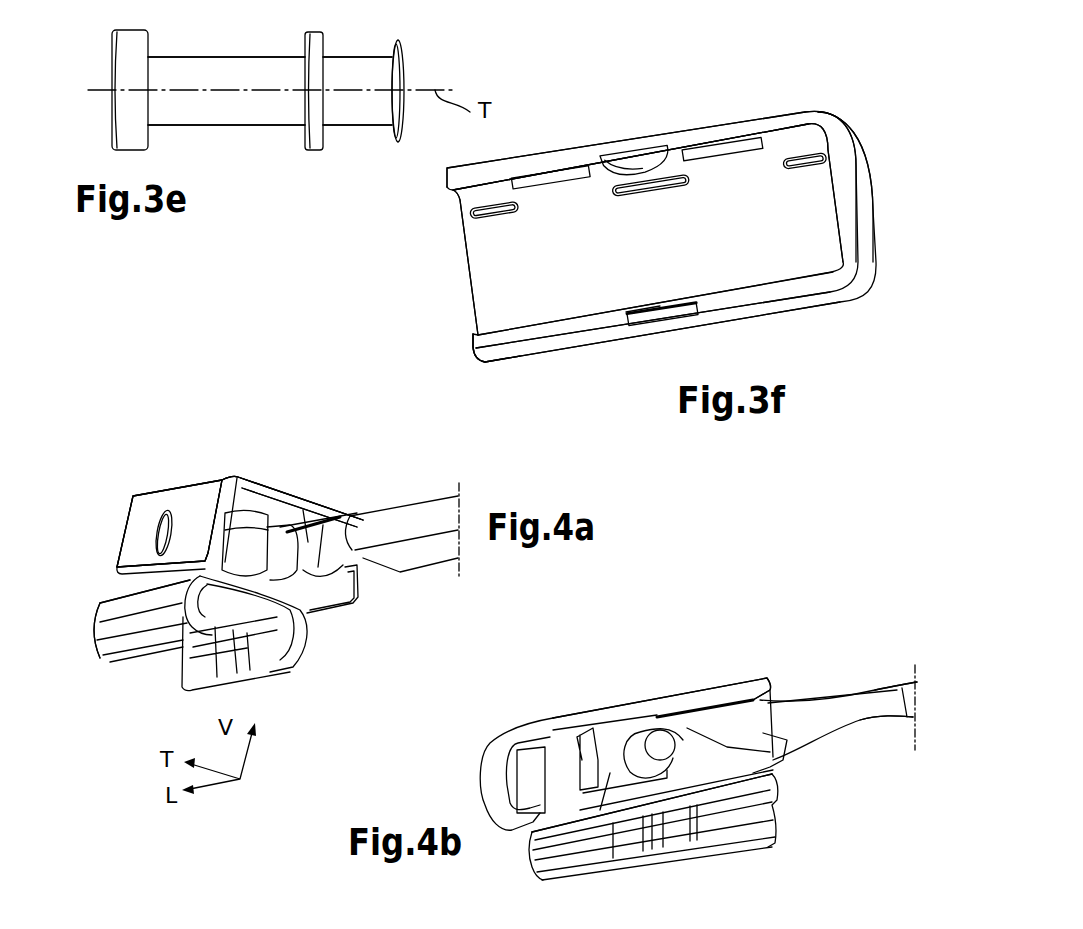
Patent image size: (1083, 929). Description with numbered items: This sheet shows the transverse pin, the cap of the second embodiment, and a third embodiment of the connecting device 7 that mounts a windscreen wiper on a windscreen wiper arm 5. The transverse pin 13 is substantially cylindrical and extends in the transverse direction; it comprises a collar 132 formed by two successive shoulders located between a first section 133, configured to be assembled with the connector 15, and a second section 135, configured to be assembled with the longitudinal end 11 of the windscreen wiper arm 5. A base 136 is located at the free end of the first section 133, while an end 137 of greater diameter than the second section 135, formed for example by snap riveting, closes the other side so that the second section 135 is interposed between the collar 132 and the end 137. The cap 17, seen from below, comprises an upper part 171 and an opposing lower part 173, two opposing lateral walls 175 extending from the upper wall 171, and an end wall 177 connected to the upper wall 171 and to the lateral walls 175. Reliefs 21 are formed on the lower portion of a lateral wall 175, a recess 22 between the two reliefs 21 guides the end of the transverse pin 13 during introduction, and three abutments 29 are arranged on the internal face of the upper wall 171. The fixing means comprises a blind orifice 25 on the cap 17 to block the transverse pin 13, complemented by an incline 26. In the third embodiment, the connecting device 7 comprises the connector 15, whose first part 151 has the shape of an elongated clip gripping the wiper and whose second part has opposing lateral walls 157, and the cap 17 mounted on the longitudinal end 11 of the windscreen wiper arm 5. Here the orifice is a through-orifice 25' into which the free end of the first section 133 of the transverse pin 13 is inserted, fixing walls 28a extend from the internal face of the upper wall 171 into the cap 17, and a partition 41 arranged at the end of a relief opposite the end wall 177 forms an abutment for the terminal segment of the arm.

In FIG. 4A, the windscreen wiper arm 5 is at (430, 512).
In FIG. 4B, the windscreen wiper arm 5 is at (873, 690).
In FIG. 4A, the connecting device 7 is at (137, 487).
In FIG. 4B, the connecting device 7 is at (713, 616).
In FIG. 4A, the longitudinal end 11 is at (328, 545).
In FIG. 4B, the longitudinal end 11 is at (720, 722).
In FIG. 3E, the transverse pin 13 is at (240, 115).
In FIG. 4B, the transverse pin 13 is at (665, 745).
In FIG. 4A, the connector 15 is at (155, 667).
In FIG. 4B, the connector 15 is at (770, 850).
In FIG. 3F, the cap 17 is at (862, 332).
In FIG. 4A, the cap 17 is at (185, 472).
In FIG. 3F, the relief 21 is at (553, 166).
In FIG. 3F, the recess 22 is at (632, 156).
In FIG. 3F, the blind orifice 25 is at (675, 271).
In FIG. 4A, the through-orifice 25' is at (109, 550).
In FIG. 3F, the incline 26 is at (613, 298).
In FIG. 4B, the fixing wall 28a is at (600, 810).
In FIG. 3F, the abutment 29 is at (812, 150).
In FIG. 4B, the partition 41 is at (540, 740).
In FIG. 3E, the collar 132 is at (313, 37).
In FIG. 3E, the first section 133 is at (195, 63).
In FIG. 4A, the first section 133 is at (238, 545).
In FIG. 4B, the first section 133 is at (633, 745).
In FIG. 3E, the second section 135 is at (368, 68).
In FIG. 3E, the base 136 is at (112, 60).
In FIG. 3E, the end 137 is at (402, 78).
In FIG. 4B, the first part 151 is at (607, 878).
In FIG. 4A, the lateral wall 157 is at (272, 560).
In FIG. 4B, the lateral wall 157 is at (760, 750).
In FIG. 3F, the upper part 171 is at (505, 298).
In FIG. 4A, the upper part 171 is at (308, 543).
In FIG. 4B, the upper part 171 is at (543, 725).
In FIG. 3F, the lower part 173 is at (458, 373).
In FIG. 3F, the lateral wall 175 is at (772, 112).
In FIG. 4A, the lateral wall 175 is at (140, 527).
In FIG. 3F, the end wall 177 is at (858, 203).
In FIG. 4B, the end wall 177 is at (488, 787).